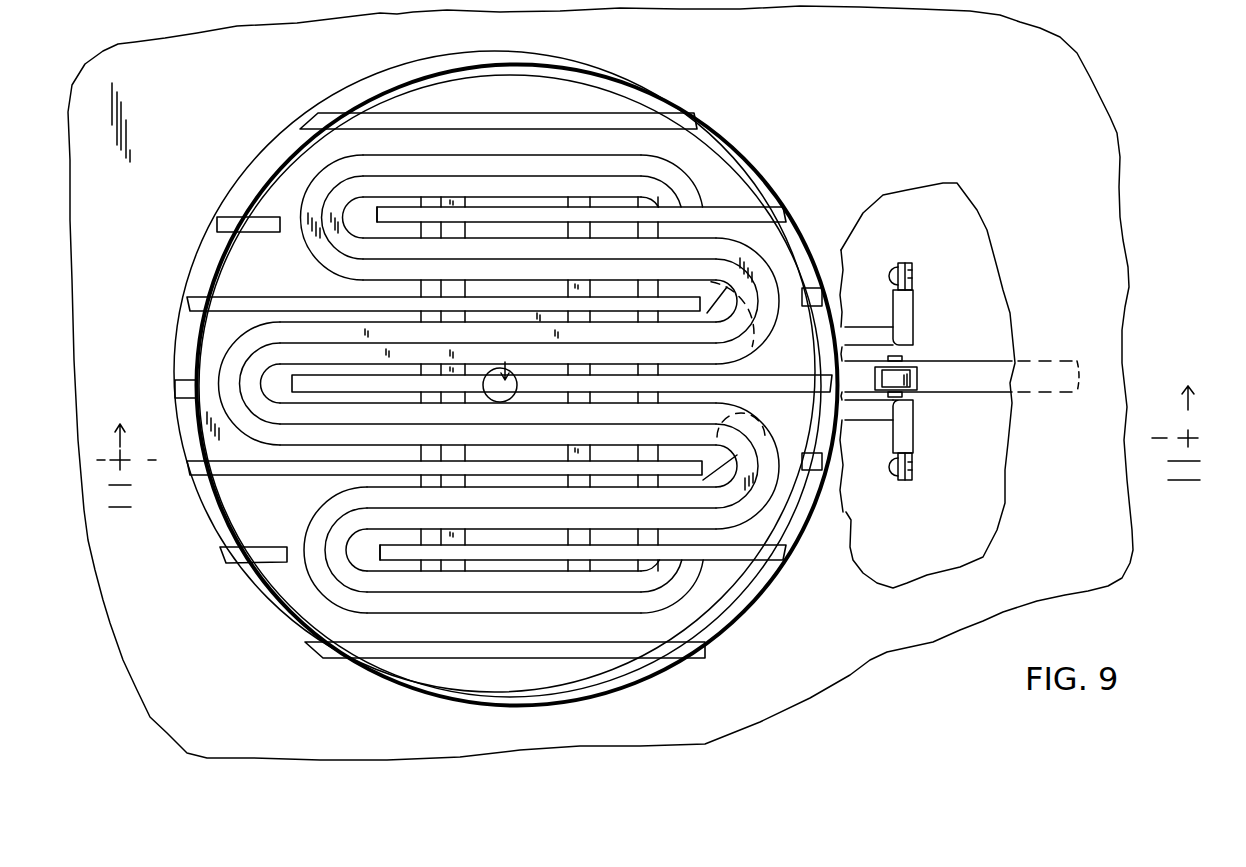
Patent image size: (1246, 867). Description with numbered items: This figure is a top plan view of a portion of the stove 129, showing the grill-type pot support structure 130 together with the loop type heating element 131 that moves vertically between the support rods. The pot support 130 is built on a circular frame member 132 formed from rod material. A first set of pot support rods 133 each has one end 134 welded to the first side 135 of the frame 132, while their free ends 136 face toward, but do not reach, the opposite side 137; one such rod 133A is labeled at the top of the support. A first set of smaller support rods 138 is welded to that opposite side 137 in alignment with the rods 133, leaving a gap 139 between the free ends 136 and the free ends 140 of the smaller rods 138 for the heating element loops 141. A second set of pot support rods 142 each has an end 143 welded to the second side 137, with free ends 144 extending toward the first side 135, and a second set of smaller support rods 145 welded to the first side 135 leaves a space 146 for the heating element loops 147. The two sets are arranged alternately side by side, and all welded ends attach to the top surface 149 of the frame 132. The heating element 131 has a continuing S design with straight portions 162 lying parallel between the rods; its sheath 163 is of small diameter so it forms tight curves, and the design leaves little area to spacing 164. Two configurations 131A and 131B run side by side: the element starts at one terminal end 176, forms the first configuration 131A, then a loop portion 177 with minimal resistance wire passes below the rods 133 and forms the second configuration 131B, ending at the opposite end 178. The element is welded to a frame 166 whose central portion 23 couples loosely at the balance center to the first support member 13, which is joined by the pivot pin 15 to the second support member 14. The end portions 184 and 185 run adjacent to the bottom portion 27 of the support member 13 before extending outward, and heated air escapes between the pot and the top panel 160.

The first horizontally disposed heating element support member 13 is at (688, 368).
The second horizontally disposed support member 14 is at (963, 394).
The pivot pin 15 is at (900, 360).
The central portion 23 is at (492, 402).
The bottom portion 27 is at (741, 401).
The stove 129 is at (1140, 216).
The grill-type pot support structure 130 is at (722, 132).
The loop type heating element 131 is at (499, 379).
The first continuing S configuration 131A is at (534, 158).
The second continuing S configuration 131B is at (605, 156).
The circular frame member 132 is at (750, 150).
The first set of pot support rods 133 is at (712, 209).
The end cross strap 133A is at (515, 112).
The end of pot support rod 134 is at (773, 205).
The first side of the frame 135 is at (793, 232).
The free ends of the rods 136 is at (337, 260).
The opposite side of the frame 137 is at (183, 293).
The first set of smaller support rods 138 is at (228, 222).
The gap 139 is at (295, 230).
The free ends of the smaller rods 140 is at (290, 214).
The heating element loops 141 is at (308, 248).
The second set of horizontally disposed pot support rods 142 is at (195, 339).
The end of second pot support rod 143 is at (189, 484).
The free ends of the second set of rods 144 is at (683, 470).
The second set of smaller support rods 145 is at (808, 291).
The space 146 is at (792, 467).
The heating element loops 147 is at (761, 498).
The top surface of the frame 149 is at (760, 582).
The top panel 160 is at (1112, 540).
The straight portions 162 is at (470, 147).
The heating element sheaths 163 is at (425, 165).
The spacing 164 is at (383, 206).
The frame 166 is at (431, 567).
The terminal end 176 is at (913, 321).
The loop portion 177 is at (662, 572).
The opposite end 178 is at (917, 447).
The heating element end portion 184 is at (865, 327).
The heating element end portion 185 is at (887, 422).